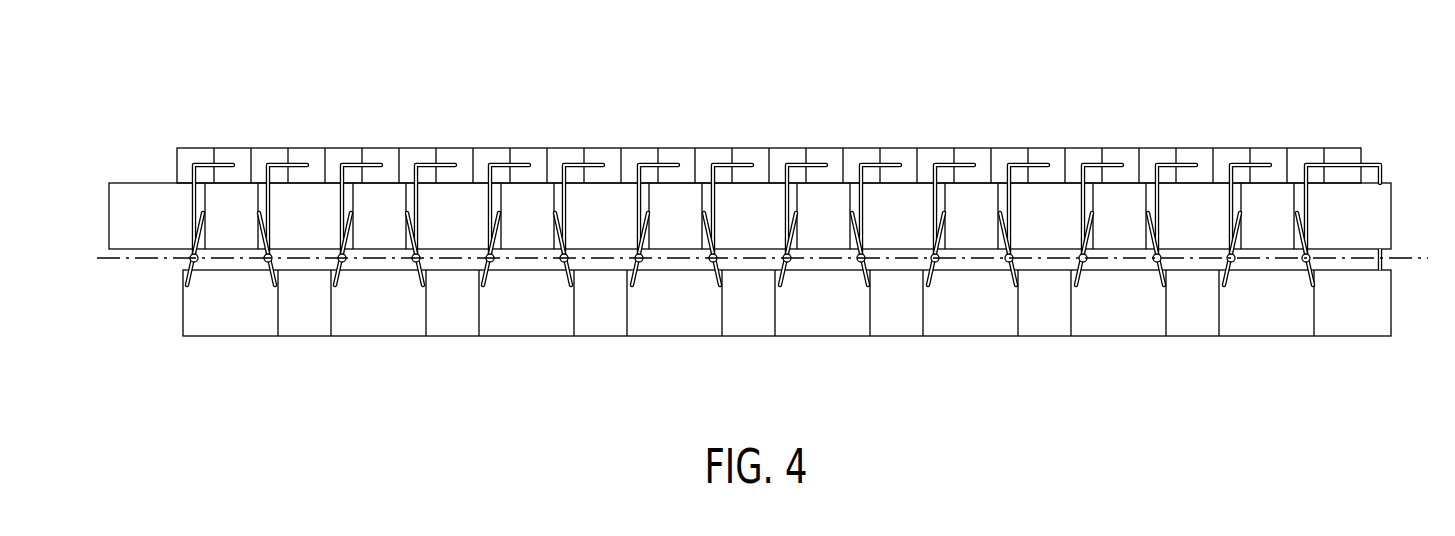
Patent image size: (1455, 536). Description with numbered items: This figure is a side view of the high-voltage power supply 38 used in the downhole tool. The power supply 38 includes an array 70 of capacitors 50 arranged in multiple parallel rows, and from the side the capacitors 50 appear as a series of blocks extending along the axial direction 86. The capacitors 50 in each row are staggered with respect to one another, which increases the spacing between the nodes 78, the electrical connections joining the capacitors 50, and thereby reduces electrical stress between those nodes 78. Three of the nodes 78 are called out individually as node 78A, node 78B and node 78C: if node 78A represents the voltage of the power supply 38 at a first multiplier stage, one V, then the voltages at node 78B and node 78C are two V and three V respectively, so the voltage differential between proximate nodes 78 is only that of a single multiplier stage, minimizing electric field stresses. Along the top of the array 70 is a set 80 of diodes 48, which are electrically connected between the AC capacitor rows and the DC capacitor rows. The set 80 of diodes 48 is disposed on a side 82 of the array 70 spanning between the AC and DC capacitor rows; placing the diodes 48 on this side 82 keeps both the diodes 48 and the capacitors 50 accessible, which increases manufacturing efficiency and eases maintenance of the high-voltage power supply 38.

The high-voltage power supply 38 is at (245, 70).
The diodes 48 is at (455, 148).
The capacitors 50 is at (380, 337).
The array 70 is at (1399, 250).
The nodes 78 is at (713, 264).
The node 78A is at (1303, 265).
The node 78B is at (1229, 265).
The node 78C is at (1155, 265).
The set of diodes 80 is at (912, 137).
The side 82 is at (147, 172).
The axial direction 86 is at (140, 260).